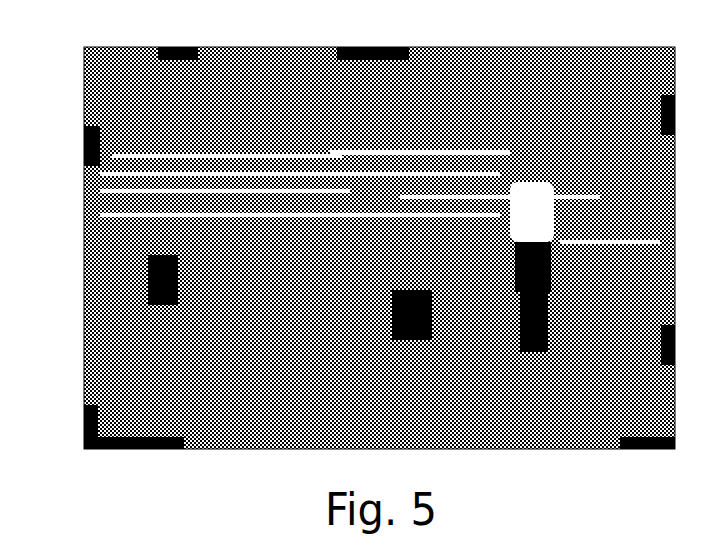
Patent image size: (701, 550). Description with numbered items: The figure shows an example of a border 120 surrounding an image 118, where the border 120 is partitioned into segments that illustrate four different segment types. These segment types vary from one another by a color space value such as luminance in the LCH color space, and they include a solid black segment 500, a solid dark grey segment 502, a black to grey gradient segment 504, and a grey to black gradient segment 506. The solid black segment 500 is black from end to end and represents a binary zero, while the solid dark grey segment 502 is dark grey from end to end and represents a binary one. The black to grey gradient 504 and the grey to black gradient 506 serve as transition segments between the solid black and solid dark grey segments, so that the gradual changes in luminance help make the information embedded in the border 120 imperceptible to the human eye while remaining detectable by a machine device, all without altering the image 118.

The image 118 is at (123, 107).
The border 120 is at (84, 235).
The solid black segment 500 is at (198, 40).
The solid dark grey segment 502 is at (282, 40).
The black to grey gradient segment 504 is at (443, 40).
The grey to black gradient segment 506 is at (332, 22).